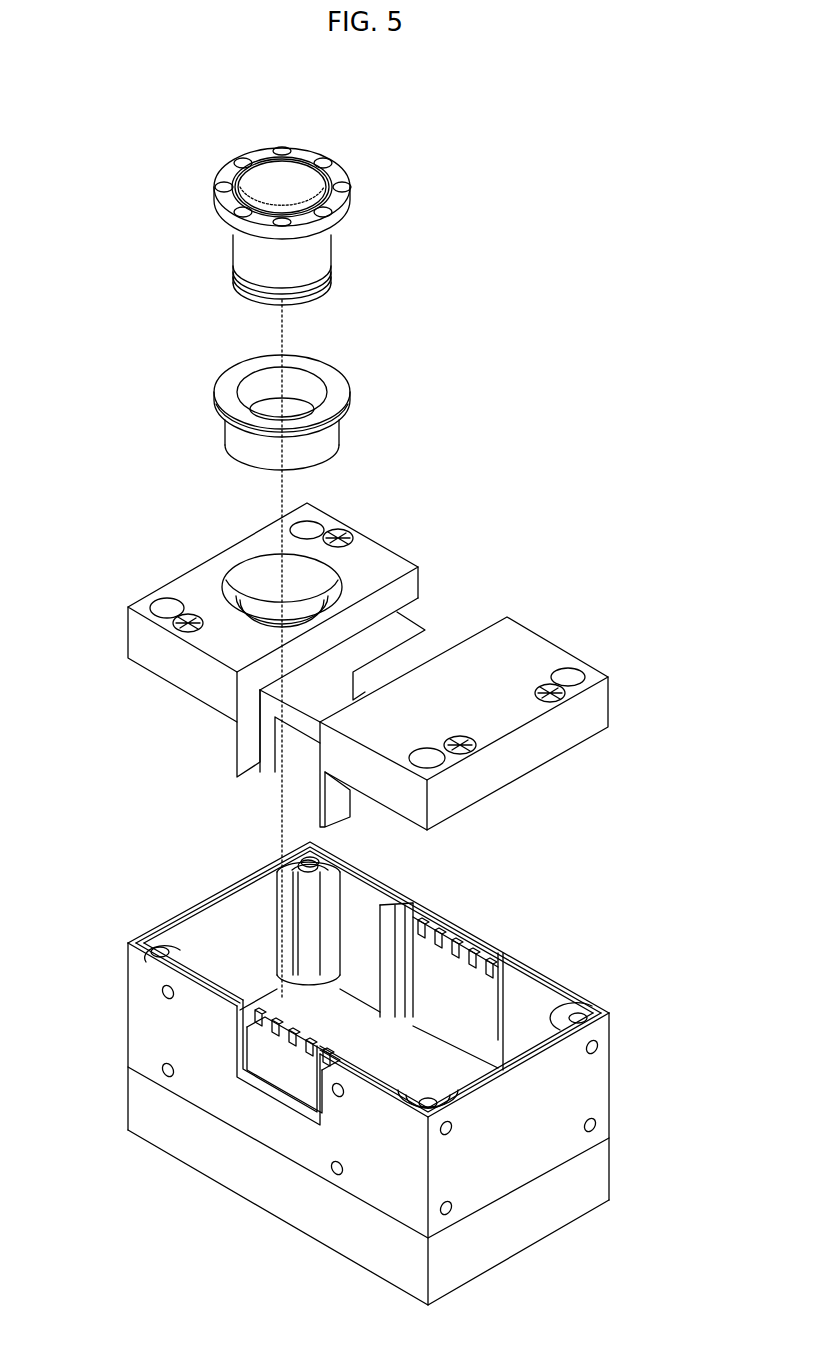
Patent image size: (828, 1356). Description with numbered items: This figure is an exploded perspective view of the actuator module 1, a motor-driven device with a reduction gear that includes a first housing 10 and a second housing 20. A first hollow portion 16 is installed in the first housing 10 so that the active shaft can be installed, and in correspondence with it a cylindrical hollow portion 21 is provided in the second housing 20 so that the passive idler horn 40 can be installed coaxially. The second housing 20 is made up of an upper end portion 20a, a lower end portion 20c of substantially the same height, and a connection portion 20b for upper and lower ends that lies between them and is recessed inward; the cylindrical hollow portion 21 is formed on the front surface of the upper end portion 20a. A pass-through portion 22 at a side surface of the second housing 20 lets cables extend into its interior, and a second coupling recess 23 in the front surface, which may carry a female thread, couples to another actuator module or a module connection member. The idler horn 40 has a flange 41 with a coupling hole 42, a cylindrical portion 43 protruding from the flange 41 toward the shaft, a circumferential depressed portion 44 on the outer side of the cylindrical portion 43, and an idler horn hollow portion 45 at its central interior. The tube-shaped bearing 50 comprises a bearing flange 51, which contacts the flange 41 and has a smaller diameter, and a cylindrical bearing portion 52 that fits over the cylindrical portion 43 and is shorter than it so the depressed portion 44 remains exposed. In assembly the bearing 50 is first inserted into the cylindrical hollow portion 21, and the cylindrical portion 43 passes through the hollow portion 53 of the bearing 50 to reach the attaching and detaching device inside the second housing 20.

The actuator module 1 is at (129, 113).
The first housing 10 is at (173, 878).
The first hollow portion 16 is at (328, 1038).
The second housing 20 is at (180, 535).
The upper end portion 20a is at (143, 642).
The connection portion for upper and lower ends 20b is at (390, 630).
The lower end portion 20c is at (513, 650).
The cylindrical hollow portion 21 is at (302, 585).
The pass-through portion 22 is at (300, 763).
The second coupling recess 23 is at (427, 758).
The idler horn 40 is at (372, 145).
The flange 41 is at (340, 207).
The coupling hole 42 is at (338, 190).
The cylindrical portion 43 is at (308, 248).
The depressed portion 44 is at (312, 286).
The idler horn hollow portion 45 is at (287, 200).
The tube-shaped bearing 50 is at (432, 338).
The bearing flange 51 is at (337, 390).
The cylindrical bearing portion 52 is at (318, 438).
The hollow portion 53 is at (296, 382).